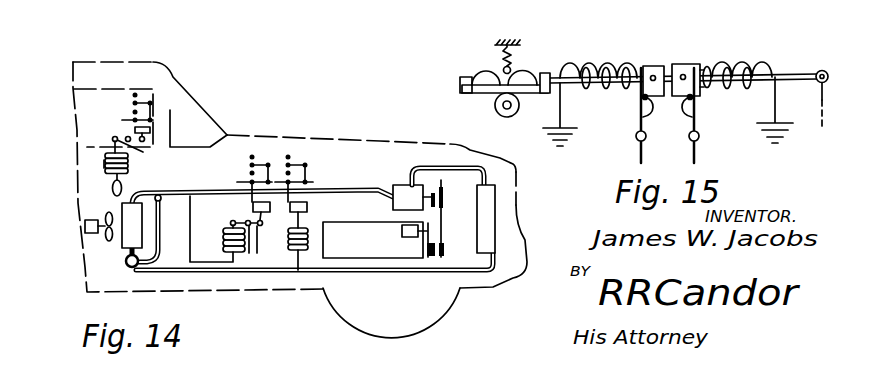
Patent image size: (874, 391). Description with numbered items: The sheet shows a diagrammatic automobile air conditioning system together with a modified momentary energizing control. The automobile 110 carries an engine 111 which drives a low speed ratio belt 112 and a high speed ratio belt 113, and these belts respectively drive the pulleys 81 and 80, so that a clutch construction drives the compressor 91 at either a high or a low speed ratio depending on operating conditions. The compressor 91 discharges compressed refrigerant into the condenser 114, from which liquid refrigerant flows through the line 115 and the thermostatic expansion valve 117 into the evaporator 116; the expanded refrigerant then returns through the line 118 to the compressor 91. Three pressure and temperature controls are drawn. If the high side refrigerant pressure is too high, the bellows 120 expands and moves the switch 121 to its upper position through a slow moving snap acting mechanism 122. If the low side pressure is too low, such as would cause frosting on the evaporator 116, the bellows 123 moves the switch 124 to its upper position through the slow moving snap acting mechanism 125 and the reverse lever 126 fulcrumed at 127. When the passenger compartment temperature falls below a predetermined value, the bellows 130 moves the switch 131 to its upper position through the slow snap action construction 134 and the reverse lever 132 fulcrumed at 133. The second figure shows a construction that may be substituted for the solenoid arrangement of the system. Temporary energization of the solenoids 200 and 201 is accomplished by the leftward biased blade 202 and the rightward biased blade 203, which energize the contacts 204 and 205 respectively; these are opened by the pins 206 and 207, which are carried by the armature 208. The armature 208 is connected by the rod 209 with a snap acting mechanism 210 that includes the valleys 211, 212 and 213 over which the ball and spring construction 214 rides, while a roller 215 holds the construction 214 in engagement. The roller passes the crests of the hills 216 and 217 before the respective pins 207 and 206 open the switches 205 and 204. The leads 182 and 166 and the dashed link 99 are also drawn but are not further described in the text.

In FIG. 14, the automobile 110 is at (340, 141).
In FIG. 14, the line 118 is at (181, 191).
In FIG. 14, the line 115 is at (295, 273).
In FIG. 14, the thermostatic expansion valve 117 is at (127, 268).
In FIG. 14, the evaporator 116 is at (122, 245).
In FIG. 14, the switch 131 is at (137, 94).
In FIG. 14, the slow snap action construction 134 is at (152, 130).
In FIG. 14, the reverse lever 132 is at (114, 137).
In FIG. 14, the fulcrum 133 is at (129, 166).
In FIG. 14, the bellows 130 is at (104, 163).
In FIG. 14, the switch 124 is at (254, 156).
In FIG. 14, the switch 121 is at (292, 157).
In FIG. 14, the slow moving snap acting mechanism 125 is at (253, 204).
In FIG. 14, the slow moving snap acting mechanism 122 is at (306, 204).
In FIG. 14, the fulcrum 127 is at (251, 247).
In FIG. 14, the reverse lever 126 is at (264, 241).
In FIG. 14, the bellows 123 is at (222, 237).
In FIG. 14, the bellows 120 is at (308, 238).
In FIG. 14, the engine 111 is at (355, 226).
In FIG. 14, the high speed ratio belt 113 is at (402, 230).
In FIG. 14, the compressor 91 is at (397, 187).
In FIG. 14, the low speed ratio belt 112 is at (445, 233).
In FIG. 14, the pulley 80 is at (440, 187).
In FIG. 14, the pulley 81 is at (444, 193).
In FIG. 14, the condenser 114 is at (488, 215).
In FIG. 15, the solenoid 200 is at (738, 62).
In FIG. 15, the solenoid 201 is at (600, 65).
In FIG. 15, the rod 209 is at (550, 78).
In FIG. 15, the pin 207 is at (653, 66).
In FIG. 15, the pin 206 is at (683, 63).
In FIG. 15, the armature 208 is at (703, 64).
In FIG. 15, the rightward biased blade 203 is at (640, 107).
In FIG. 15, the contact 205 is at (638, 134).
In FIG. 15, the lead 182 is at (636, 152).
In FIG. 15, the contact 204 is at (697, 127).
In FIG. 15, the leftward biased blade 202 is at (697, 104).
In FIG. 15, the lead 166 is at (697, 152).
In FIG. 15, the link rod 99 is at (822, 110).
In FIG. 15, the snap acting mechanism 210 is at (461, 85).
In FIG. 15, the valley 213 is at (470, 94).
In FIG. 15, the valley 211 is at (544, 93).
In FIG. 15, the hill 217 is at (502, 73).
In FIG. 15, the hill 216 is at (526, 68).
In FIG. 15, the ball and spring construction 214 is at (502, 72).
In FIG. 15, the valley 212 is at (497, 92).
In FIG. 15, the roller 215 is at (506, 118).